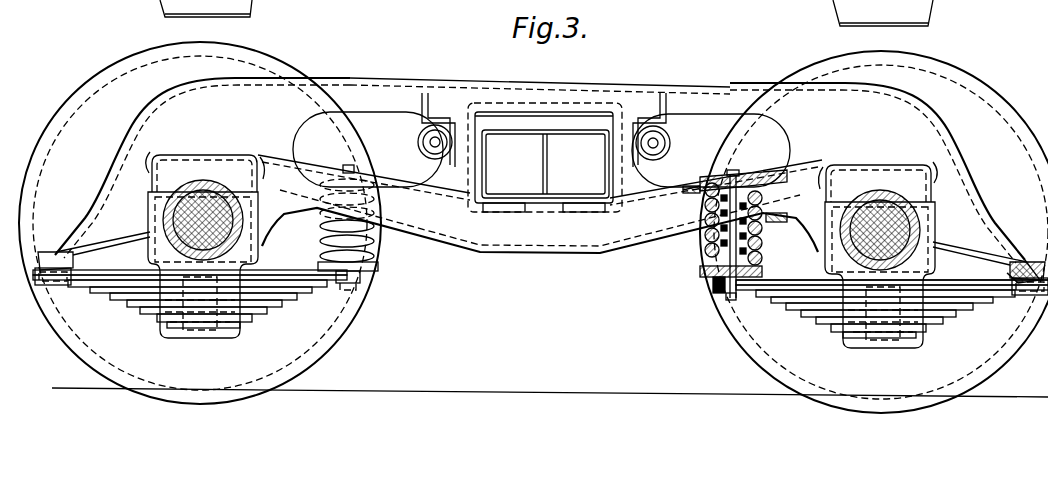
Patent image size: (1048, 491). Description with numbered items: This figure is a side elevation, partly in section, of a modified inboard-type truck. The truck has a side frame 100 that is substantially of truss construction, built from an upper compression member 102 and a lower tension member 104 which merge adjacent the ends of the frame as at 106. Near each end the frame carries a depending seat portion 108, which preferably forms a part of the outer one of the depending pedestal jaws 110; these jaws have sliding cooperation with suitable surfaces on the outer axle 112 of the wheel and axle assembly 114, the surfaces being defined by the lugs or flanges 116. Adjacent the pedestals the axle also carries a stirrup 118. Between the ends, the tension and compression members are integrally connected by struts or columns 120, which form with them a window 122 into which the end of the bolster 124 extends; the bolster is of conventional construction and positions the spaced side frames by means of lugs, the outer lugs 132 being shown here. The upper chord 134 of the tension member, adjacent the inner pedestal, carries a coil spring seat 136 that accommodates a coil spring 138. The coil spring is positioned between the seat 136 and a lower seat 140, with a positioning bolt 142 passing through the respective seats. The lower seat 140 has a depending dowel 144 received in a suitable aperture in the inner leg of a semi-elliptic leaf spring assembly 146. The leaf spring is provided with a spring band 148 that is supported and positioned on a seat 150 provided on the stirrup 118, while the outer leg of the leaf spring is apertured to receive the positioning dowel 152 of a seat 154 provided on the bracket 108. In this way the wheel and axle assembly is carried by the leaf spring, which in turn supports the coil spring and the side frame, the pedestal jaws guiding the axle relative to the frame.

The side frame 100 is at (385, 78).
The upper compression member 102 is at (540, 74).
The lower tension member 104 is at (573, 238).
The merging portion of the members 106 is at (813, 123).
The depending seat portion 108 is at (88, 233).
The depending pedestal jaws 110 is at (258, 160).
The outer axle 112 is at (204, 183).
The wheel and axle assembly 114 is at (115, 76).
The lugs or flanges 116 is at (252, 256).
The stirrup 118 is at (847, 278).
The struts or columns 120 is at (467, 140).
The window 122 is at (518, 117).
The bolster 124 is at (558, 135).
The outer lugs 132 is at (505, 212).
The upper chord 134 is at (688, 187).
The coil spring seat 136 is at (713, 177).
The coil spring 138 is at (378, 242).
The seat 140 is at (380, 268).
The positioning bolt 142 is at (352, 165).
The depending dowel 144 is at (357, 290).
The semi-elliptic leaf spring assembly 146 is at (290, 300).
The spring band 148 is at (197, 310).
The seat 150 is at (223, 330).
The positioning dowel 152 is at (58, 284).
The seat 154 is at (58, 262).